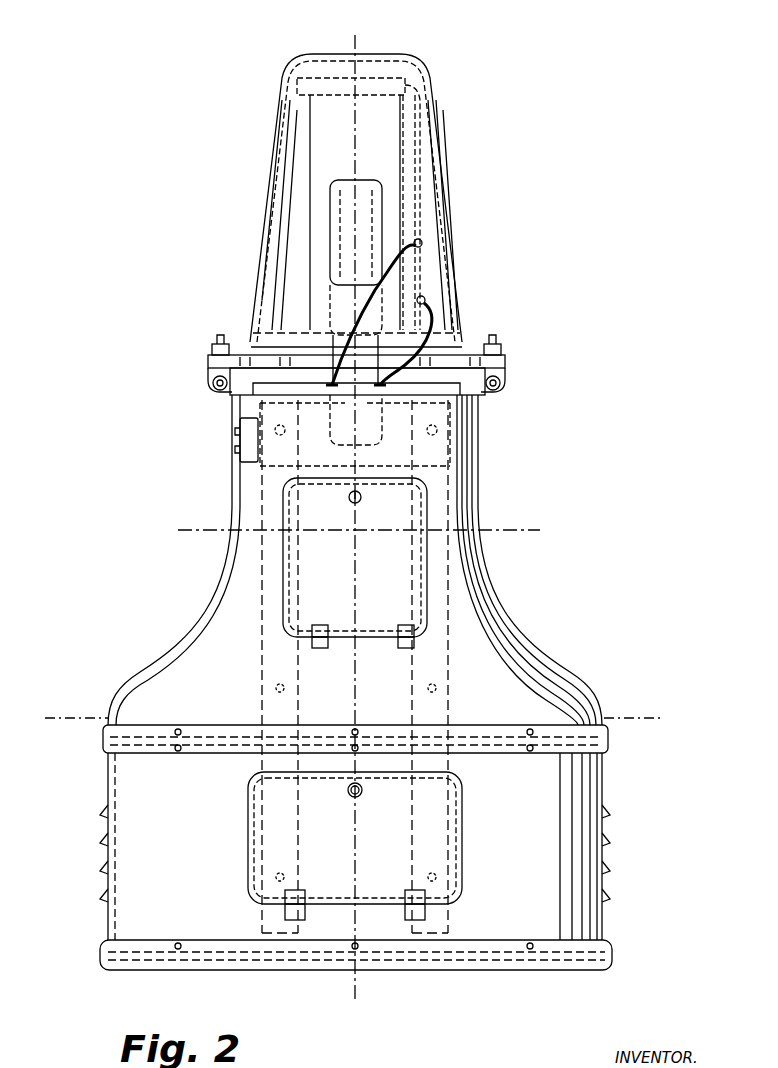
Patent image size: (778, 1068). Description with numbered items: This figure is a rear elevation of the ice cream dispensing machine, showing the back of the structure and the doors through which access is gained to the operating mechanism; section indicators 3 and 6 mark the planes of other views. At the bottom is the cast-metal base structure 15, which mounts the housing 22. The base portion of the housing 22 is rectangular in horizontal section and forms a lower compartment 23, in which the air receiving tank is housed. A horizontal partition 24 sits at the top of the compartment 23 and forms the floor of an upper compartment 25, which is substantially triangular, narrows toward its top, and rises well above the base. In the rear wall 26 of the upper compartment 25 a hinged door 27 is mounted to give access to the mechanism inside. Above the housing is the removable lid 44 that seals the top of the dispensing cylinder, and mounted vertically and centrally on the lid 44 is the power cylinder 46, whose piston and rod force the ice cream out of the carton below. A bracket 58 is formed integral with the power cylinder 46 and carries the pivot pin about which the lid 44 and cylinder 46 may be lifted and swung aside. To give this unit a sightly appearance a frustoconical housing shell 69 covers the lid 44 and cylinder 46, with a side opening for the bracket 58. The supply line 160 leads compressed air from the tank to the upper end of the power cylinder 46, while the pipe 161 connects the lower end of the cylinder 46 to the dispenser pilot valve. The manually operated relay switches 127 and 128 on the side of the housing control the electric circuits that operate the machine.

The section line 3- 3 is at (355, 35).
The section line 6- 6 is at (53, 715).
The base structure 15 is at (606, 960).
The housing 22 is at (585, 793).
The compartment 23 is at (570, 880).
The horizontal partition 24 is at (553, 738).
The upper compartment 25 is at (520, 672).
The rear wall 26 is at (470, 620).
The hinged door 27 is at (400, 555).
The removable lid 44 is at (493, 370).
The power cylinder 46 is at (330, 140).
The bracket 58 is at (340, 232).
The frustoconical housing shell 69 is at (440, 178).
The manually operated relay switch 127 is at (238, 450).
The manually operated relay switch 128 is at (240, 432).
The supply line 160 is at (400, 262).
The pipe 161 is at (435, 322).